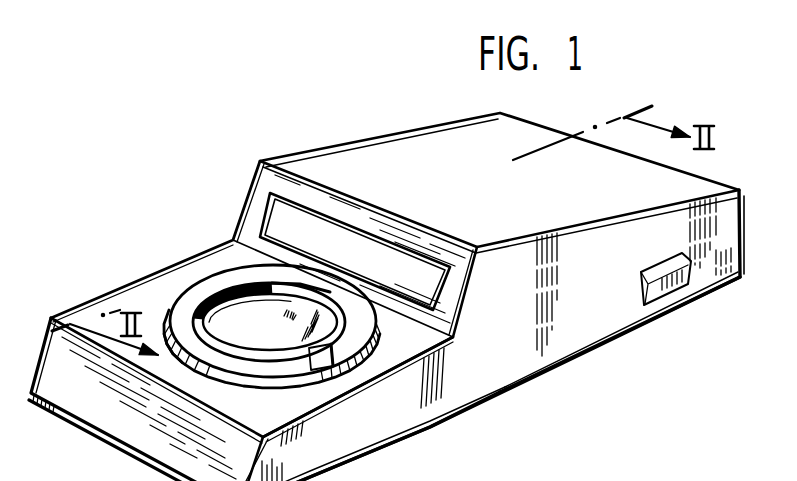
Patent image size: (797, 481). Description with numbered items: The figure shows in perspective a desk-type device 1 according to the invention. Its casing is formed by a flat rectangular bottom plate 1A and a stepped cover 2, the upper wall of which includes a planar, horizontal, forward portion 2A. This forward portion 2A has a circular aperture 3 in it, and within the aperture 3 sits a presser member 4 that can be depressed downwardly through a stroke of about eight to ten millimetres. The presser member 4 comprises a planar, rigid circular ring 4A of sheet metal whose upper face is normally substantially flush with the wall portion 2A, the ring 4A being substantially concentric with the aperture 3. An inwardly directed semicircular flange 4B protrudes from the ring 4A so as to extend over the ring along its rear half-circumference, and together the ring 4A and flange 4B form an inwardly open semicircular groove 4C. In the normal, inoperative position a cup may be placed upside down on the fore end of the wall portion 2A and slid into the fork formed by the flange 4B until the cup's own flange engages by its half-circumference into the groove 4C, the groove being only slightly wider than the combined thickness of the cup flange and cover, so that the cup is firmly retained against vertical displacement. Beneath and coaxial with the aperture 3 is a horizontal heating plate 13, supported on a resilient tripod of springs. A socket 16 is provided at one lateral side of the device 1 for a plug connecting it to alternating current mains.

The device 1 is at (230, 205).
The bottom plate 1A is at (533, 380).
The stepped cover 2 is at (480, 378).
The forward portion 2A is at (368, 363).
The circular aperture 3 is at (163, 330).
The presser member 4 is at (222, 265).
The circular ring 4A is at (242, 360).
The semicircular flange 4B is at (338, 355).
The semicircular groove 4C is at (303, 357).
The heating plate 13 is at (265, 328).
The socket 16 is at (640, 292).